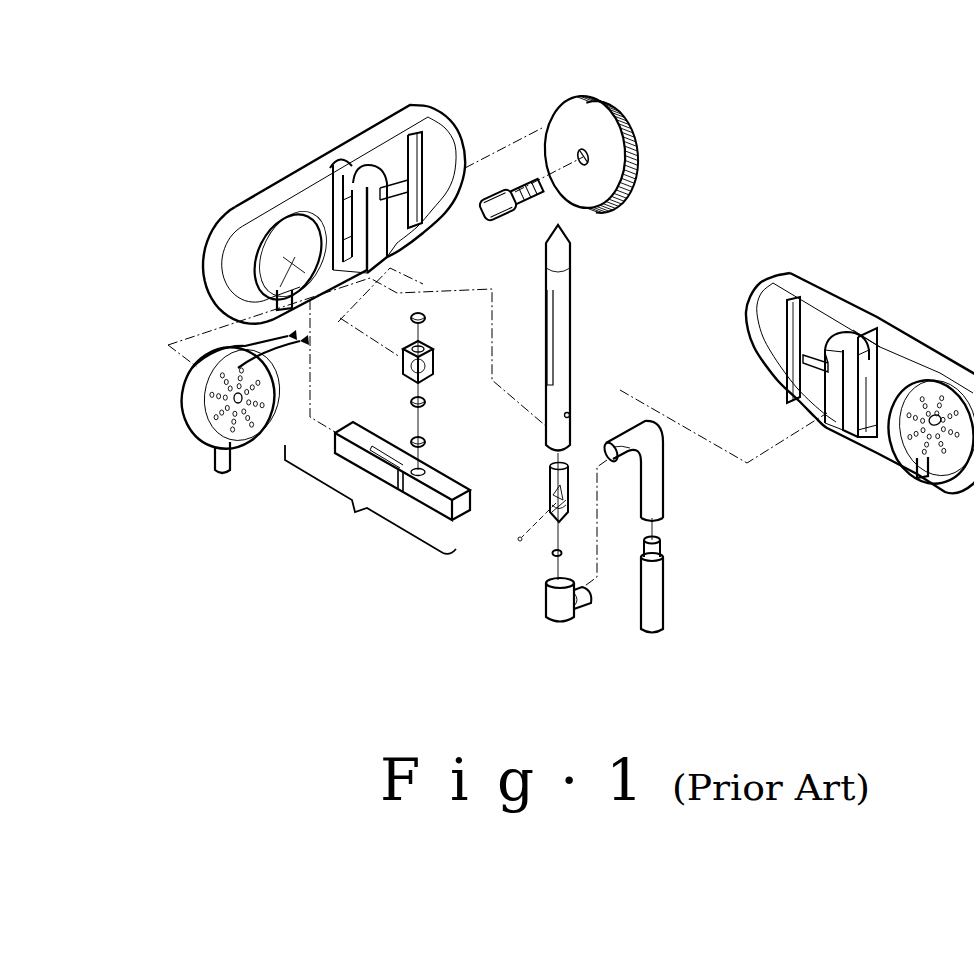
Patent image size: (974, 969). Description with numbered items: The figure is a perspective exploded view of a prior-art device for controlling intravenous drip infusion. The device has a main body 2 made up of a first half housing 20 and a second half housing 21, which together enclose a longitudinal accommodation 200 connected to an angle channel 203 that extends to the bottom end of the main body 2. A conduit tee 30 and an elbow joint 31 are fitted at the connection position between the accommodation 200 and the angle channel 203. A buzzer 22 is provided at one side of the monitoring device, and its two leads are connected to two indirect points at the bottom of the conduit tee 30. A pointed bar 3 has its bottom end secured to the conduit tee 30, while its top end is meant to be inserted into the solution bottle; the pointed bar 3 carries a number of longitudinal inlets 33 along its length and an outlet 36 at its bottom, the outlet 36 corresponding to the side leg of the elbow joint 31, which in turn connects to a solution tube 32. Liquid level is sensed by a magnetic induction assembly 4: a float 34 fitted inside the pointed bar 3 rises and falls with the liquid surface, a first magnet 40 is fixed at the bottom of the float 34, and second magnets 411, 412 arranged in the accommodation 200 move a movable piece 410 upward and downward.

The main body 2 is at (851, 328).
The first half housing 20 is at (910, 347).
The second half housing 21 is at (375, 133).
The buzzer 22 is at (195, 413).
The longitudinal accommodation 200 is at (870, 367).
The angle channel 203 is at (840, 347).
The pointed bar 3 is at (575, 338).
The conduit tee 30 is at (560, 602).
The elbow joint 31 is at (655, 483).
The solution tube 32 is at (655, 588).
The longitudinal inlets 33 is at (548, 328).
The float 34 is at (553, 483).
The outlet 36 is at (569, 414).
The magnetic induction assembly 4 is at (377, 488).
The first magnet 40 is at (550, 555).
The movable piece 410 is at (413, 360).
The second magnet 411 is at (419, 314).
The second magnet 412 is at (423, 434).